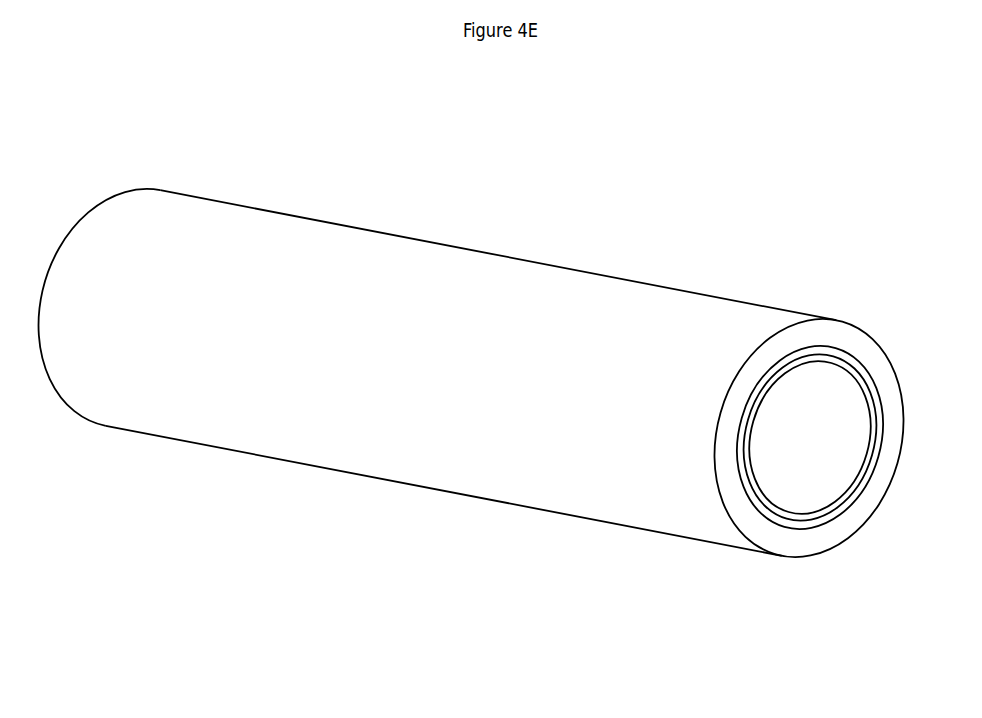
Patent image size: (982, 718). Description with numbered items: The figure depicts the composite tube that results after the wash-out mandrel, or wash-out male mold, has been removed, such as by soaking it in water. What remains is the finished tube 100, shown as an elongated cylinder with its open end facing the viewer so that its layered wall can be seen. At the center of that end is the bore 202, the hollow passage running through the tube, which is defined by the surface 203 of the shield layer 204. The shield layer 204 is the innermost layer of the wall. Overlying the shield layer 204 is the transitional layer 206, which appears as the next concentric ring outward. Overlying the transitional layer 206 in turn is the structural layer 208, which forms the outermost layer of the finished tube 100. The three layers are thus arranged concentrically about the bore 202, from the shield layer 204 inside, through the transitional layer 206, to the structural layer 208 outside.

The finished tube 100 is at (488, 412).
The bore 202 is at (810, 438).
The surface 203 is at (868, 437).
The shield layer 204 is at (800, 516).
The transitional layer 206 is at (833, 509).
The structural layer 208 is at (866, 500).